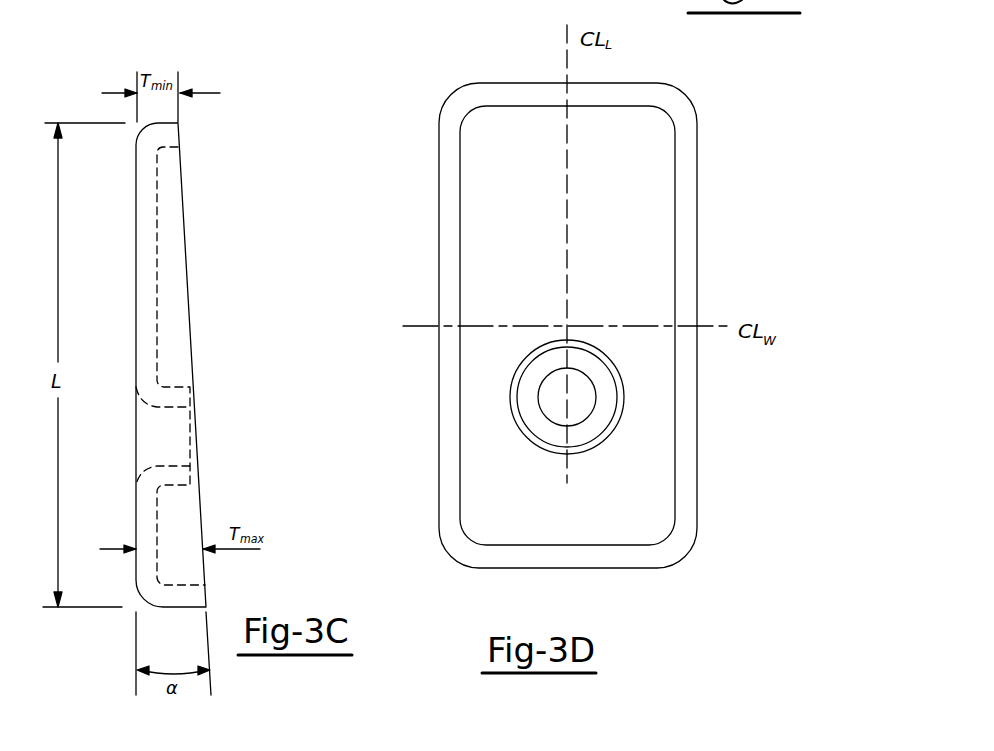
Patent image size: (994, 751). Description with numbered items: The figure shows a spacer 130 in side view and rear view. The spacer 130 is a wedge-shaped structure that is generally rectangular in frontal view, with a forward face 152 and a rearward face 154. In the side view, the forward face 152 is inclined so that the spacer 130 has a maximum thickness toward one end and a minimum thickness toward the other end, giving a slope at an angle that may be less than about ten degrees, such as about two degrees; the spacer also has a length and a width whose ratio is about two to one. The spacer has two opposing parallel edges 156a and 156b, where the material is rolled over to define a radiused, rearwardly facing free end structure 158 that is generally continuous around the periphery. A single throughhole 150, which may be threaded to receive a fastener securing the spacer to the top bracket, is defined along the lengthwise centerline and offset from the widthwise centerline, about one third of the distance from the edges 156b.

In FIG. 3C, the spacer 130 is at (171, 365).
In FIG. 3D, the spacer 130 is at (736, 196).
In FIG. 3D, the throughhole 150 is at (578, 407).
In FIG. 3C, the forward face 152 is at (136, 275).
In FIG. 3C, the rearward face 154 is at (157, 275).
In FIG. 3D, the rearward face 154 is at (545, 190).
In FIG. 3D, the opposing parallel edge 156a is at (439, 221).
In FIG. 3D, the opposing parallel edge 156b is at (512, 83).
In FIG. 3C, the free end structure 158 is at (178, 132).